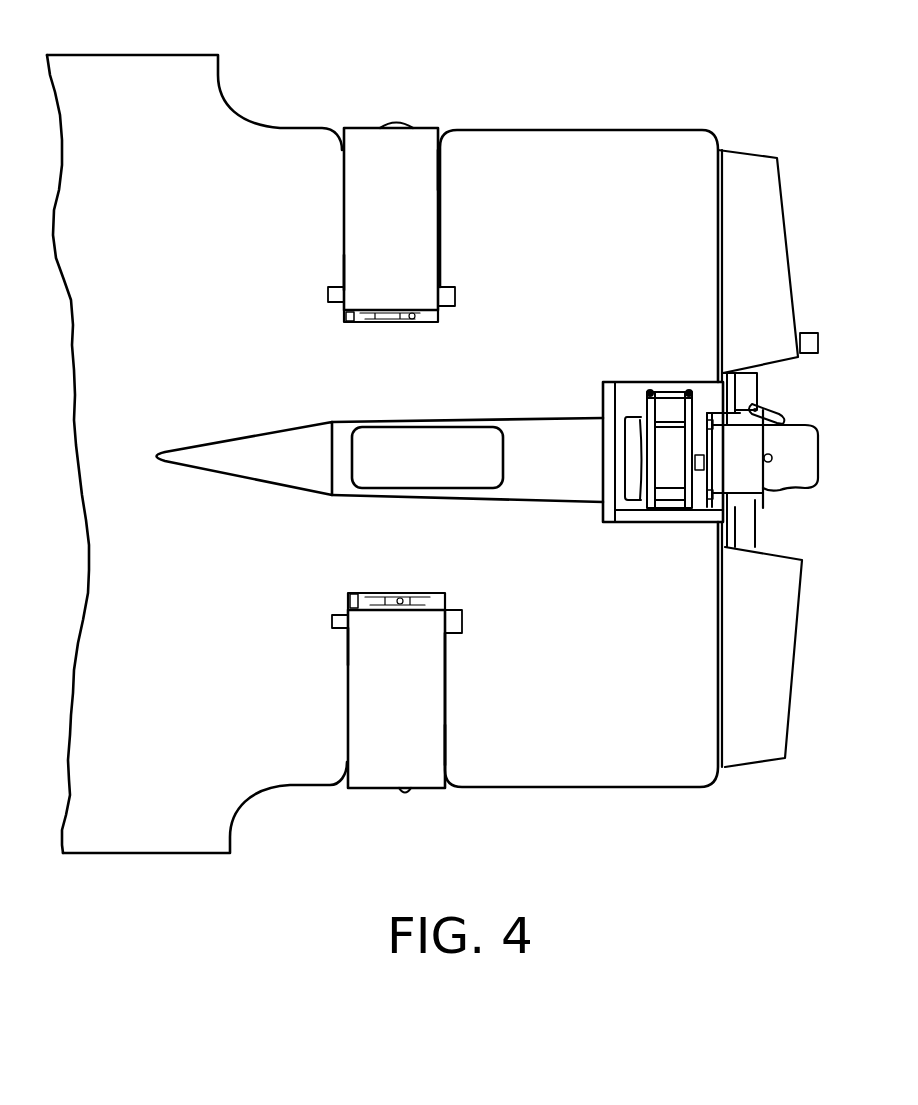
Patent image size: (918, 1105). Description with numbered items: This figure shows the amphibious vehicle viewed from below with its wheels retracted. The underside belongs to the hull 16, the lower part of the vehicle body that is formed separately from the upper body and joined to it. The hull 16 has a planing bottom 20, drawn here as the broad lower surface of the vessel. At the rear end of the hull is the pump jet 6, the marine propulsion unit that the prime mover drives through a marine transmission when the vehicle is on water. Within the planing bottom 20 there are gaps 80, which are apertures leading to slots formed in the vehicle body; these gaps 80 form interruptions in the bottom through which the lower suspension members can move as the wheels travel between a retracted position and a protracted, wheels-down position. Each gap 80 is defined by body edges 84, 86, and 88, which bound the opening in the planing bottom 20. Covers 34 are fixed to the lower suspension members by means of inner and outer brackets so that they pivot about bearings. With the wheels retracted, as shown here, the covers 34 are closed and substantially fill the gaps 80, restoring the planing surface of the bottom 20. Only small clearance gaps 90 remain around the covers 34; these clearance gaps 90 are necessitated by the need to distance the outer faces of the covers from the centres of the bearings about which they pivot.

The pump jet 6 is at (783, 418).
The hull 16 is at (432, 454).
The planing bottom 20 is at (645, 269).
The covers 34 is at (405, 236).
The gaps 80 is at (400, 116).
The body edge 84 is at (438, 168).
The body edge 86 is at (400, 322).
The body edge 88 is at (344, 273).
The clearance gaps 90 is at (344, 320).